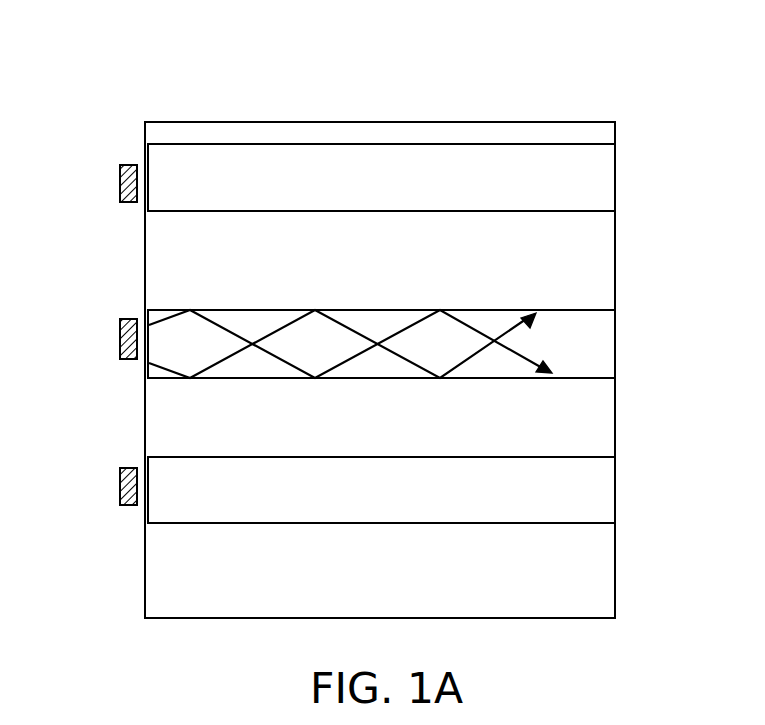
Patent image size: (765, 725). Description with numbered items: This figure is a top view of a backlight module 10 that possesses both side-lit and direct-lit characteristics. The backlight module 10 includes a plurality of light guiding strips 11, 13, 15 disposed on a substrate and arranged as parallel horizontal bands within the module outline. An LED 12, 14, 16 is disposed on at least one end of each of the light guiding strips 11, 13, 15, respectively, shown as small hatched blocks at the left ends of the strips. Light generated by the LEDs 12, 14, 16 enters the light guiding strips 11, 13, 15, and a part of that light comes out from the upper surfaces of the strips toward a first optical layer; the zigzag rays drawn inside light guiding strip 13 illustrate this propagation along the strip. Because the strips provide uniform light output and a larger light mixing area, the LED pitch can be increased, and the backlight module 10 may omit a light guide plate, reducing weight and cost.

The backlight module 10 is at (568, 90).
The light guiding strip 11 is at (609, 172).
The LED 12 is at (120, 186).
The light guiding strip 13 is at (607, 348).
The LED 14 is at (120, 339).
The light guiding strip 15 is at (605, 498).
The LED 16 is at (120, 487).